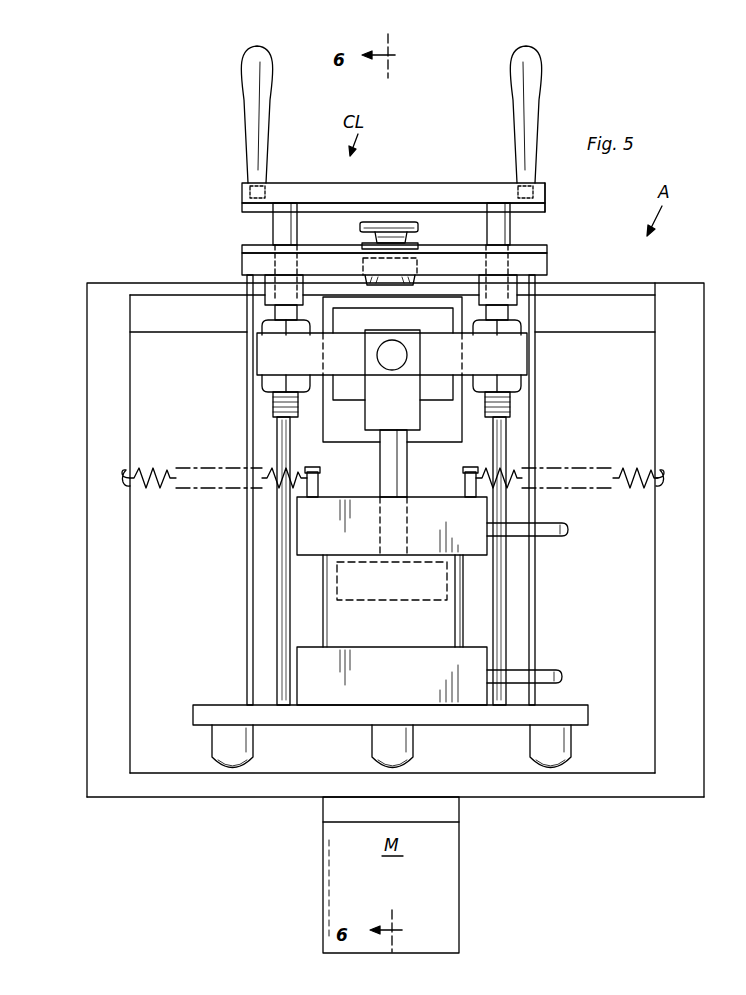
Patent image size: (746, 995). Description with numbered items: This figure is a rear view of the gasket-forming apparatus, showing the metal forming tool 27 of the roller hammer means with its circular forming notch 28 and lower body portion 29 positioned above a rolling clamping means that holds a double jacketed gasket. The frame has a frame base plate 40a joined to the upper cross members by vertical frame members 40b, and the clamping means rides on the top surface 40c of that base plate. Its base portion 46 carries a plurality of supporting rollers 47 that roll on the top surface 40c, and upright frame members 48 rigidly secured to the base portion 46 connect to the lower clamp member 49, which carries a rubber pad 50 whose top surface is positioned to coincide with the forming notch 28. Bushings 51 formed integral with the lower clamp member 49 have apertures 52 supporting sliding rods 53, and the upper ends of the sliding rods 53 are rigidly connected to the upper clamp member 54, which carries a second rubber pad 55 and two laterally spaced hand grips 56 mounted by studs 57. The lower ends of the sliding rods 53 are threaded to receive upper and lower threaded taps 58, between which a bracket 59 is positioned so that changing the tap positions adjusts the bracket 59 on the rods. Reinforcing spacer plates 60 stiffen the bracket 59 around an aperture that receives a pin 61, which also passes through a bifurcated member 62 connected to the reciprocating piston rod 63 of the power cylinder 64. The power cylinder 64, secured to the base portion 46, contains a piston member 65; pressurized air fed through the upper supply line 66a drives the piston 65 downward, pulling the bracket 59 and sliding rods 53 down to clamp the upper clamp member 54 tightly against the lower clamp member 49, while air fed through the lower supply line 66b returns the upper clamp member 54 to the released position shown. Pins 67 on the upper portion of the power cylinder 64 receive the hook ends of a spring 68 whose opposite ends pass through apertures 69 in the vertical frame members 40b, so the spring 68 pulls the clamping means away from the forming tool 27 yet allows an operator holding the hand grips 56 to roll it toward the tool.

The metal forming tool 27 is at (384, 222).
The circular forming notch 28 is at (373, 240).
The lower body portion 29 is at (418, 246).
The frame base plate 40a is at (503, 800).
The vertical frame members 40b is at (122, 642).
The top surface of frame base plate 40c is at (594, 778).
The base portion 46 is at (225, 706).
The supporting rollers 47 is at (213, 746).
The upright frame members 48 is at (255, 588).
The lower clamp member 49 is at (548, 264).
The rubber pad 50 is at (548, 248).
The bushings 51 is at (272, 282).
The apertures 52 is at (262, 297).
The sliding rods 53 is at (273, 215).
The upper clamp member 54 is at (468, 185).
The rubber pad 55 is at (547, 200).
The hand grips 56 is at (255, 100).
The studs 57 is at (250, 194).
The threaded taps 58 is at (266, 326).
The bracket 59 is at (515, 352).
The reinforcing spacer plates 60 is at (433, 320).
The pin 61 is at (392, 362).
The bifurcated member 62 is at (403, 419).
The reciprocating piston rod 63 is at (380, 483).
The power cylinder 64 is at (425, 633).
The piston member 65 is at (372, 602).
The upper supply line 66a is at (565, 537).
The lower supply line 66b is at (565, 675).
The pins 67 is at (318, 470).
The spring 68 is at (176, 490).
The apertures 69 is at (130, 462).